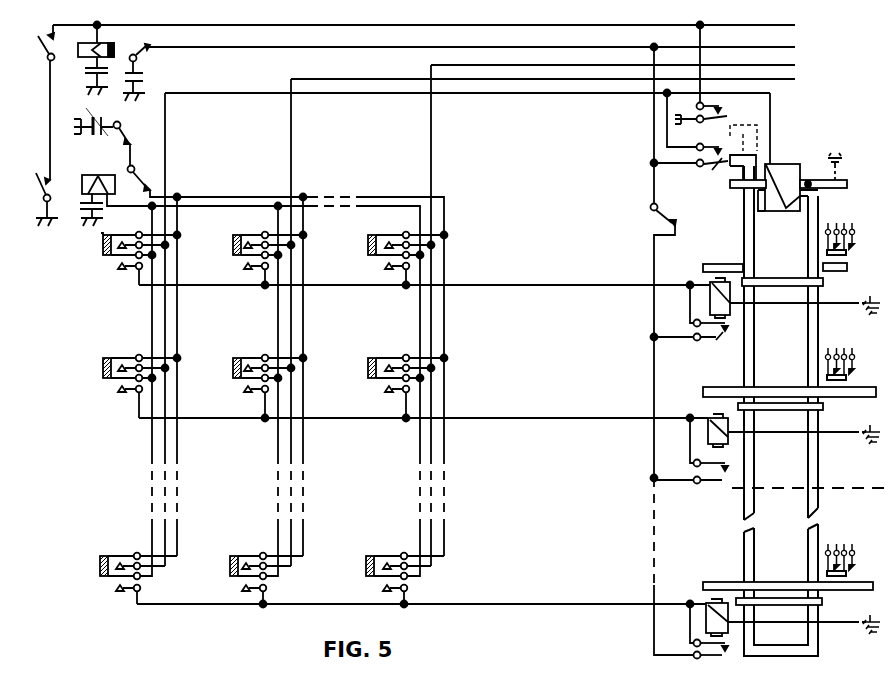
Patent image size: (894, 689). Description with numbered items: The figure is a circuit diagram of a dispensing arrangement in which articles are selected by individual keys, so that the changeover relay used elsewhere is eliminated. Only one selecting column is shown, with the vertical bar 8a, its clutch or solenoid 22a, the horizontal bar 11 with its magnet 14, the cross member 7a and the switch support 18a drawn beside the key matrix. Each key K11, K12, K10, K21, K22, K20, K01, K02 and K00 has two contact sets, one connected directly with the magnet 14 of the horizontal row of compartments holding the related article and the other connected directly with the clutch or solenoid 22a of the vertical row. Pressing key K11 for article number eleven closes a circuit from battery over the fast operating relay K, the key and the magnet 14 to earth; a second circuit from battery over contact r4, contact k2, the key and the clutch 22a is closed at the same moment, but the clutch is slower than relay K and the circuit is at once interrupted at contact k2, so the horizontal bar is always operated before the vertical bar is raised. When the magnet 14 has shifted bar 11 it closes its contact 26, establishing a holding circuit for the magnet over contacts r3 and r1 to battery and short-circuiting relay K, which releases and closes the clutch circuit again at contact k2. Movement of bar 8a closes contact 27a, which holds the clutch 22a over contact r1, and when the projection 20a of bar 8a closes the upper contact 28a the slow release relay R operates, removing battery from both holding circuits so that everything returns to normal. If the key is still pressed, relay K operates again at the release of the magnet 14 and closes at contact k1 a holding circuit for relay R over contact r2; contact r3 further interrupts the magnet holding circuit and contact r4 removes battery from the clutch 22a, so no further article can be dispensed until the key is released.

The contact r2 is at (41, 102).
The slow release relay R is at (91, 60).
The contact r1 is at (137, 72).
The contact r4 is at (112, 137).
The contact k2 is at (143, 177).
The fast operating relay K is at (97, 193).
The contact k1 is at (35, 199).
The key K11 is at (128, 259).
The key K12 is at (258, 260).
The key K10 is at (396, 260).
The key K21 is at (128, 387).
The key K22 is at (257, 388).
The key K20 is at (396, 388).
The key K01 is at (125, 578).
The key K02 is at (255, 580).
The key K00 is at (392, 580).
The upper contact 28a is at (722, 109).
The projection 20a is at (716, 135).
The contact 27a is at (713, 170).
The contact r3 is at (664, 212).
The magnet 14 is at (708, 285).
The horizontal bar 11 is at (721, 268).
The contact 26 is at (690, 344).
The cross member 7a is at (825, 283).
The clutch or solenoid 22a is at (784, 180).
The vertical bar 8a is at (818, 224).
The switch support 18a is at (847, 253).